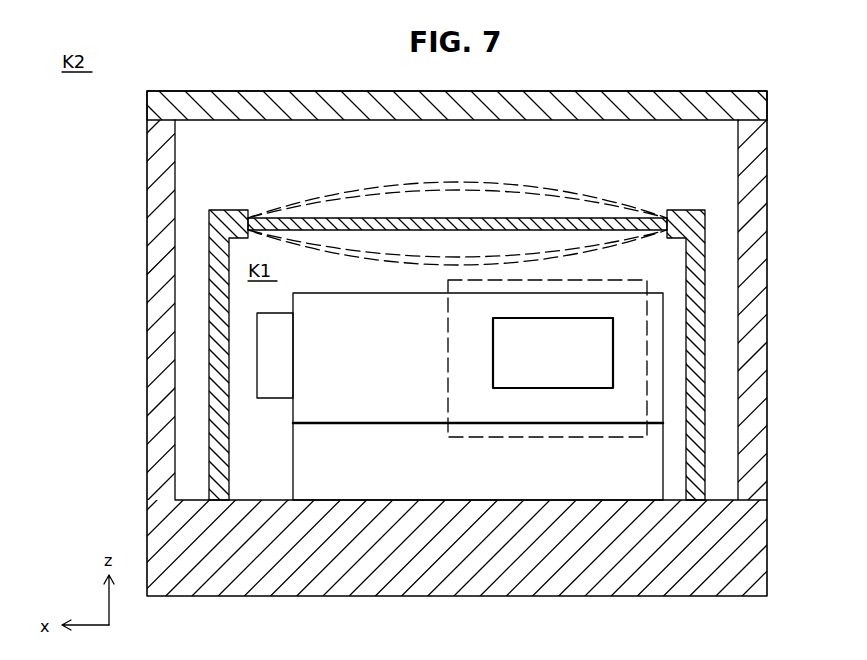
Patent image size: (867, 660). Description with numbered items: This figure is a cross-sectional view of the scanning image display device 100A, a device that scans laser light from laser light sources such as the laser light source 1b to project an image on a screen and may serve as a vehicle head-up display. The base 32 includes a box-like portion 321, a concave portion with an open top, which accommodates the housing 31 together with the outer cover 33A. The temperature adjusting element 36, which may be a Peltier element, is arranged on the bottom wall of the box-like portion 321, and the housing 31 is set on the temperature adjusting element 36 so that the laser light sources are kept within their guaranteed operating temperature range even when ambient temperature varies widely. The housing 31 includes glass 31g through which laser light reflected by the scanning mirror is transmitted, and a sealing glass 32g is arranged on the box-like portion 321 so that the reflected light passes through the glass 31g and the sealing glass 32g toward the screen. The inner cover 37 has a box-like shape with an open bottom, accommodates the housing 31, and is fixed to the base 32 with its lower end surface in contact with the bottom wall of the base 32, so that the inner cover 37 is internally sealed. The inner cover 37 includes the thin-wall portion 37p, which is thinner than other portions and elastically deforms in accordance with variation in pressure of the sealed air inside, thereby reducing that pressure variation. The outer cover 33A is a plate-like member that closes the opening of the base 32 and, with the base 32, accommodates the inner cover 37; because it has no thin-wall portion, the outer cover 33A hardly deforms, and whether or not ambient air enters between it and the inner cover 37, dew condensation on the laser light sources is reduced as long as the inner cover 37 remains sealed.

The scanning image display device 100A is at (593, 77).
The outer cover 33A is at (703, 110).
The base 32 is at (445, 597).
The box-like portion 321 is at (622, 568).
The inner cover 37 is at (208, 458).
The thin-wall portion 37p is at (505, 217).
The housing 31 is at (387, 398).
The temperature adjusting element 36 is at (395, 463).
The laser light source 1b is at (273, 368).
The glass 31g is at (493, 351).
The sealing glass 32g is at (647, 403).